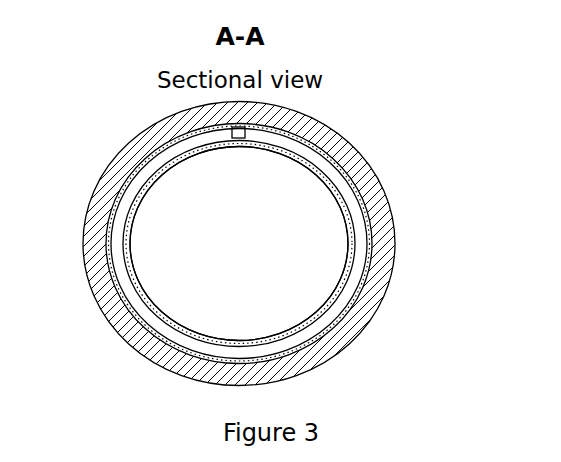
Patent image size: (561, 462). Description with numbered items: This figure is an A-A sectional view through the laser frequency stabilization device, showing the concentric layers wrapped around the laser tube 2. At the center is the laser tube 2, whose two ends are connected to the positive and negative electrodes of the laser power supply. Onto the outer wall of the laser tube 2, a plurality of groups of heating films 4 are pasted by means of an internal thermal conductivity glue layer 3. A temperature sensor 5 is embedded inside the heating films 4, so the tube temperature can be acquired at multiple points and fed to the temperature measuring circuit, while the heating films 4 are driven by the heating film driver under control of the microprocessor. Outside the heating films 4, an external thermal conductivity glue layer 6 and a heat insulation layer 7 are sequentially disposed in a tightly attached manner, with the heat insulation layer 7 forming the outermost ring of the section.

The laser tube 2 is at (280, 295).
The internal thermal conductivity glue layer 3 is at (349, 217).
The plurality of groups of heating films 4 is at (123, 275).
The temperature sensor 5 is at (240, 132).
The external thermal conductivity glue layer 6 is at (121, 190).
The heat insulation layer 7 is at (163, 132).